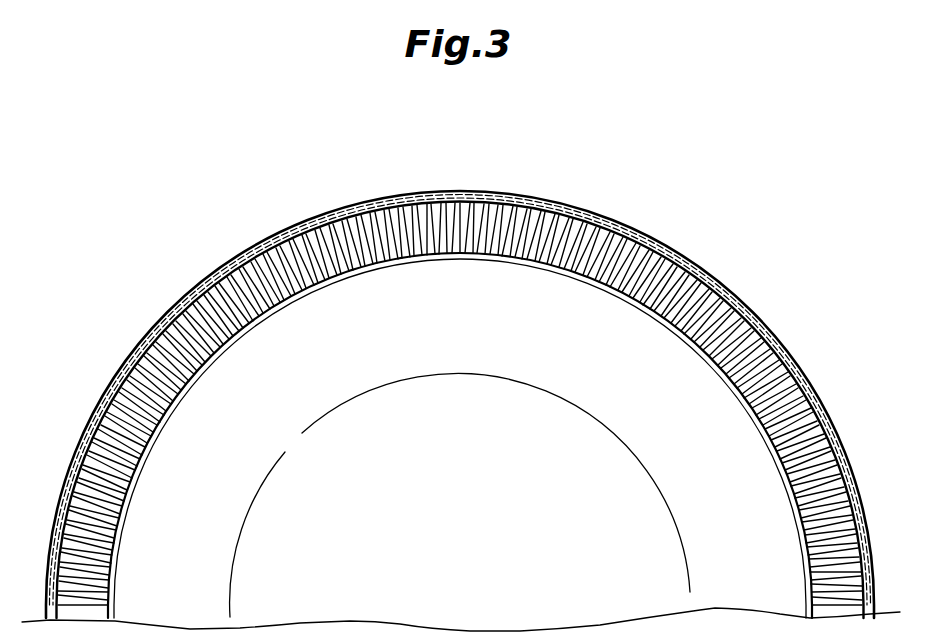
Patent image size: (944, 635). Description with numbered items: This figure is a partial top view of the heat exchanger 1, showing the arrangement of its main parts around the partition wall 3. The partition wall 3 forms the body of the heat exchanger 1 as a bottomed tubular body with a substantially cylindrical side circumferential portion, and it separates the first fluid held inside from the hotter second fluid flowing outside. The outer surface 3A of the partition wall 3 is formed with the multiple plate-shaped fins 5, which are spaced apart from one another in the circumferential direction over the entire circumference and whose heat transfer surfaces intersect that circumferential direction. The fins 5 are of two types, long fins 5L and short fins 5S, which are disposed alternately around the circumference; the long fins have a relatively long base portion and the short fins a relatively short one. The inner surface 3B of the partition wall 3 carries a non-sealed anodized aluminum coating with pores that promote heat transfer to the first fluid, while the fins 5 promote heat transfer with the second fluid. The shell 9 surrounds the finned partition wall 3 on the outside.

The heat exchanger 1 is at (461, 363).
The partition wall 3 is at (460, 357).
The outer surface 3A is at (237, 262).
The inner surface 3B is at (448, 258).
The plate-shaped fins 5 is at (460, 350).
The long fins 5L is at (333, 215).
The short fins 5S is at (293, 138).
The shell 9 is at (460, 403).